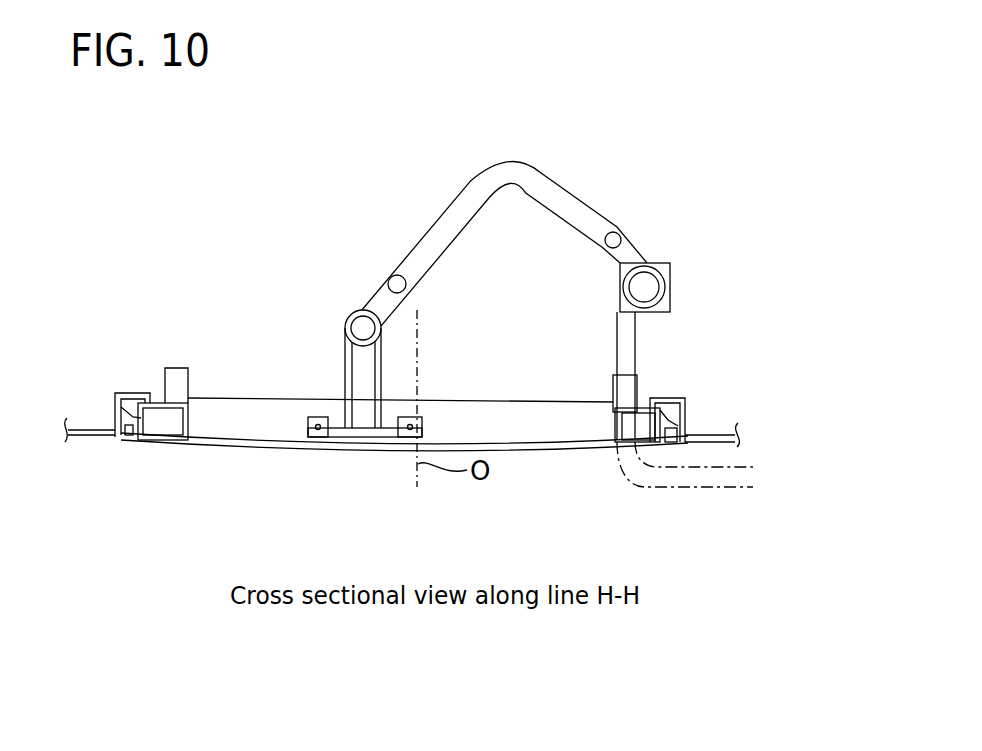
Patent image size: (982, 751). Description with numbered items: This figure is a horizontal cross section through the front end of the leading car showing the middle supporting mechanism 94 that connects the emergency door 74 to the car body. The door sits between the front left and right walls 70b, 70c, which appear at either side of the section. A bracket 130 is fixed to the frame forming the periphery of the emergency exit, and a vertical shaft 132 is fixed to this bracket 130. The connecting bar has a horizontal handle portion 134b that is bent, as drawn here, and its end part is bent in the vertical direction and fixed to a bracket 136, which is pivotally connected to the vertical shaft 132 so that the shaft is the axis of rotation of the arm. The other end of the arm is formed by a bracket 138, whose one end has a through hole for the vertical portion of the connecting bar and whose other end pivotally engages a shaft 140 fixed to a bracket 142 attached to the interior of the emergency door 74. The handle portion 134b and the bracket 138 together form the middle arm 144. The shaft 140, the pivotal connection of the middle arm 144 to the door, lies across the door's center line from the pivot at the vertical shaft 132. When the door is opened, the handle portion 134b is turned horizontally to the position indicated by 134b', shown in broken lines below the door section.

The middle arm 144 is at (435, 230).
The horizontal handle portion 134b is at (493, 236).
The bracket 138 is at (358, 253).
The bracket 136 is at (640, 243).
The vertical shaft 132 is at (670, 272).
The bracket 130 is at (670, 302).
The shaft 140 is at (363, 328).
The bracket 142 is at (382, 370).
The middle supporting mechanism 94 is at (342, 299).
The emergency door 74 is at (227, 445).
The front right wall 70c is at (87, 437).
The front left wall 70b is at (713, 447).
The turned position of handle portion 134b' is at (666, 494).